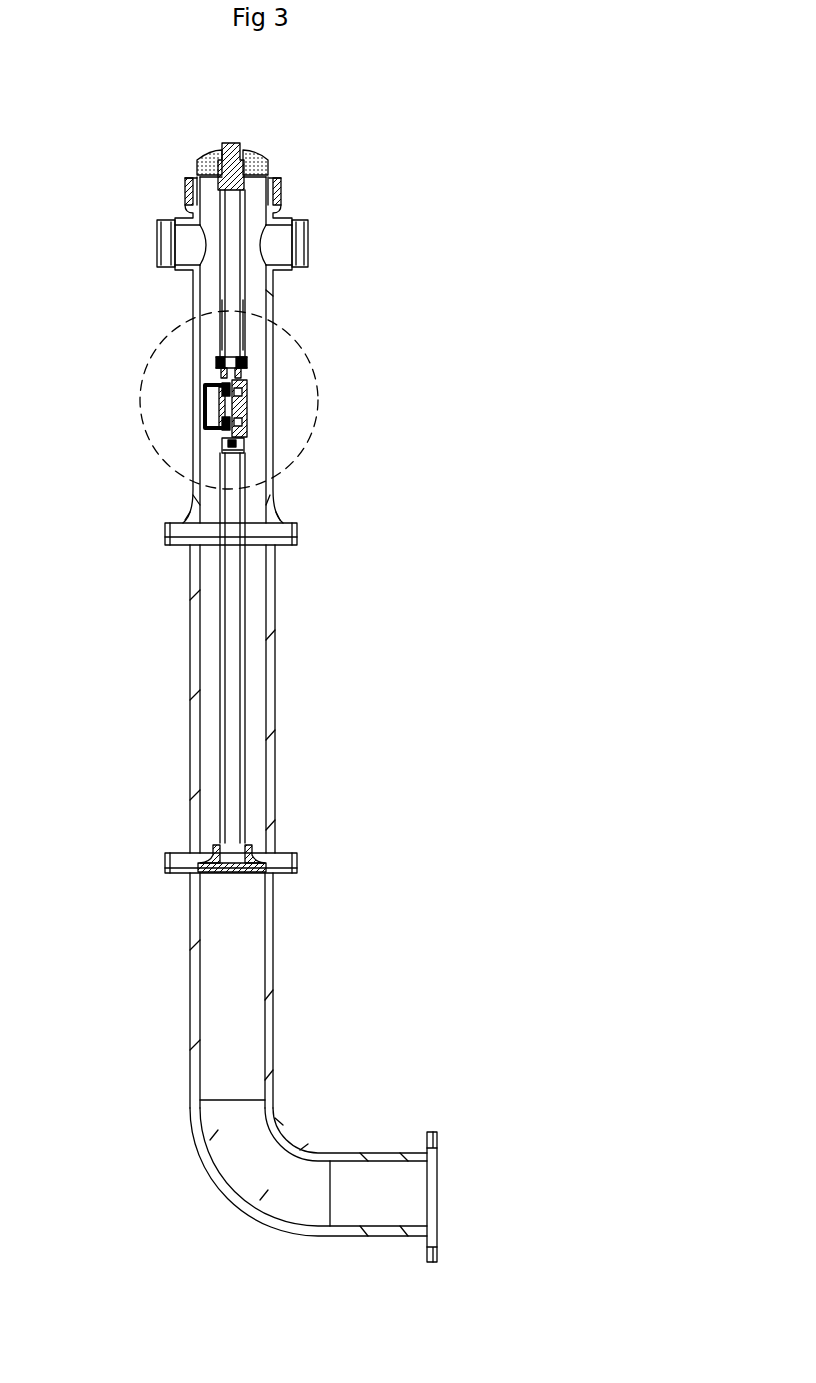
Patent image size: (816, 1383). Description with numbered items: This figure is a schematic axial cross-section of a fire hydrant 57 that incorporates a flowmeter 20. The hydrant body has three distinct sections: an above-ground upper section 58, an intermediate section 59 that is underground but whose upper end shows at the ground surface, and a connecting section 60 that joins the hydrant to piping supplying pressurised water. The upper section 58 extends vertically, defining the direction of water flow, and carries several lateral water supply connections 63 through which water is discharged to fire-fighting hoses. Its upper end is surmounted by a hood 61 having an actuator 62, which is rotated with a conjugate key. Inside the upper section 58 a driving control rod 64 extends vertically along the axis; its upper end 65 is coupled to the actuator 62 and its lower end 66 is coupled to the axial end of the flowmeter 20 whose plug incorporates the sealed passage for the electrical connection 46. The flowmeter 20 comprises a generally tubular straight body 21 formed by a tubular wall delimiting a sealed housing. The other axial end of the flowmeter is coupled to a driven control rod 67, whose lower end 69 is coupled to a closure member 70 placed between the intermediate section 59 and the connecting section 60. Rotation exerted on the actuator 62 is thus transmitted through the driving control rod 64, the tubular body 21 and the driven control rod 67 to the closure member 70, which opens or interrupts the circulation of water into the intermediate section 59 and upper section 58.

The flowmeter 20 is at (205, 384).
The tubular body 21 is at (248, 408).
The electrical connection 46 is at (232, 278).
The fire hydrant 57 is at (267, 302).
The upper section 58 is at (198, 302).
The intermediate section 59 is at (193, 628).
The connecting section 60 is at (193, 1016).
The hood 61 is at (197, 165).
The actuator 62 is at (229, 143).
The lateral water supply connections 63 is at (157, 223).
The driving control rod 64 is at (243, 313).
The upper end of the driving control rod 65 is at (270, 188).
The lower end of the driving control rod 66 is at (248, 361).
The driven control rod 67 is at (246, 565).
The lower end of the driven control rod 69 is at (243, 848).
The closure member 70 is at (262, 870).